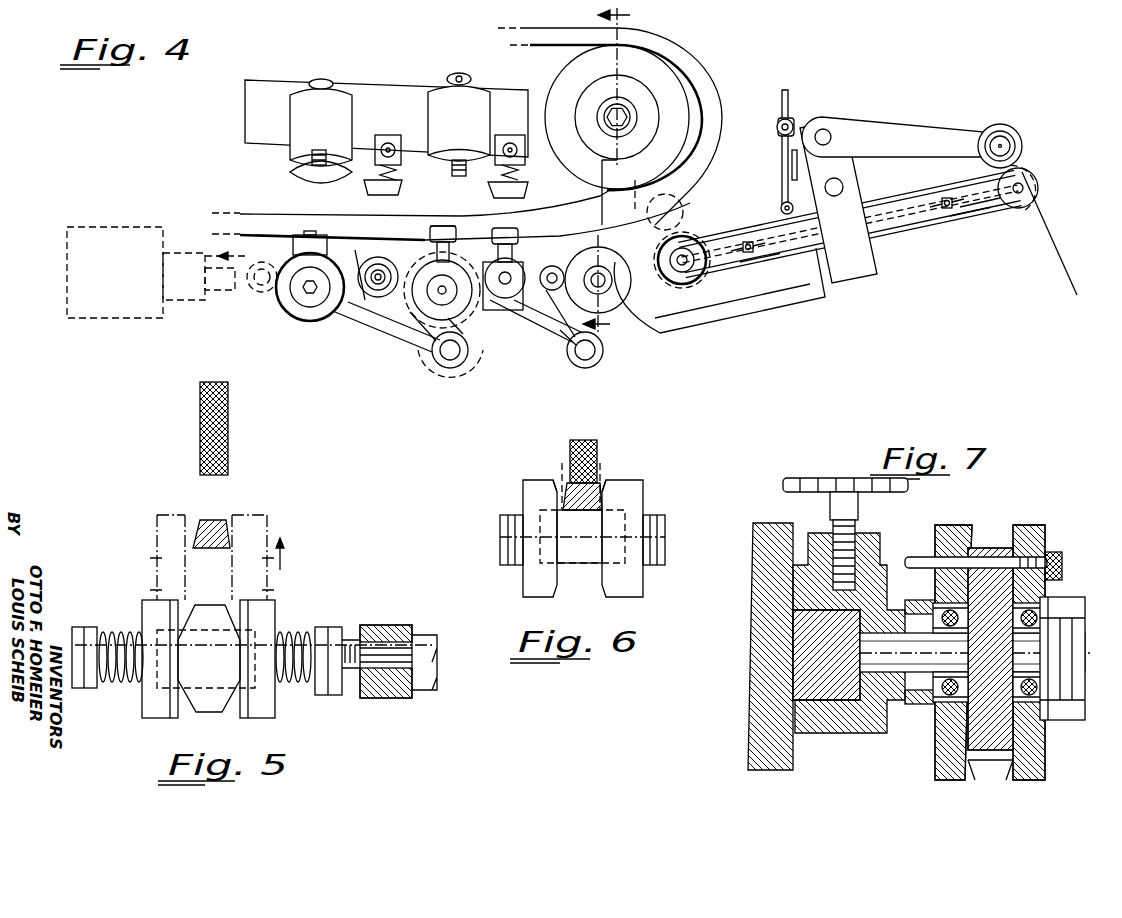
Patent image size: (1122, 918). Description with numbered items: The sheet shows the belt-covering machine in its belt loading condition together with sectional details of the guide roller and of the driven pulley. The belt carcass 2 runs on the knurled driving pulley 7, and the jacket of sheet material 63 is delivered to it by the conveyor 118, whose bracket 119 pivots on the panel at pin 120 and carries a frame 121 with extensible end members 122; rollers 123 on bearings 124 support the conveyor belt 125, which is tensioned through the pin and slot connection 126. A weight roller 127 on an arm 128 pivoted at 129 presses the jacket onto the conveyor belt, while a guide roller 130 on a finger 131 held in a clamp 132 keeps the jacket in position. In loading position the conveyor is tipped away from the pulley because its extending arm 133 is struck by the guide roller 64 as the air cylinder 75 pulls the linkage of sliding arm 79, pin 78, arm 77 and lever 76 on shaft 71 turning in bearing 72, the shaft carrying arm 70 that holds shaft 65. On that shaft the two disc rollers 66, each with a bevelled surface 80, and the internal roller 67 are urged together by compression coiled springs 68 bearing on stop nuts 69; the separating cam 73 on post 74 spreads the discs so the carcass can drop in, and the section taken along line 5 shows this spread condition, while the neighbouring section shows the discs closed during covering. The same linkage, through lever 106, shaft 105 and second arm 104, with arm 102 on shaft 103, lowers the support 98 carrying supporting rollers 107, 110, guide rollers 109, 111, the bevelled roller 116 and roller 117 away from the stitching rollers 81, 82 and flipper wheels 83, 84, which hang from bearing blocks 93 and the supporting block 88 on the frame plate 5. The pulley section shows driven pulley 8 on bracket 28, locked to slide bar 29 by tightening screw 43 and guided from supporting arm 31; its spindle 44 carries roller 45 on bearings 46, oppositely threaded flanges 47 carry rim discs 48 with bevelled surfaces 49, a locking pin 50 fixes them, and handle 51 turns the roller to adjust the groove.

In FIG. 4, the carcass 2 is at (706, 101).
In FIG. 5, the carcass 2 is at (212, 518).
In FIG. 6, the carcass 2 is at (605, 494).
In FIG. 4, the plate 5 is at (613, 172).
In FIG. 4, the driving pulley 7 is at (660, 70).
In FIG. 5, the driving pulley 7 is at (229, 426).
In FIG. 6, the driving pulley 7 is at (598, 450).
In FIG. 7, the driven pulley 8 is at (989, 640).
In FIG. 7, the bracket 28 is at (868, 733).
In FIG. 7, the slide bar 29 is at (842, 700).
In FIG. 7, the supporting arm 31 is at (752, 676).
In FIG. 7, the tightening screw 43 is at (860, 510).
In FIG. 7, the spindle 44 is at (1085, 655).
In FIG. 7, the roller 45 is at (1048, 566).
In FIG. 7, the bearings 46 is at (1035, 706).
In FIG. 7, the flanges 47 is at (1055, 608).
In FIG. 7, the rim discs 48 is at (1046, 537).
In FIG. 7, the bevelled surface 49 is at (975, 545).
In FIG. 7, the locking pin 50 is at (1063, 560).
In FIG. 7, the handle 51 is at (1082, 712).
In FIG. 4, the sheet material 63 is at (1042, 218).
In FIG. 6, the sheet material 63 is at (603, 470).
In FIG. 4, the guide roller 64 is at (553, 342).
In FIG. 5, the guide roller 64 is at (282, 618).
In FIG. 6, the guide roller 64 is at (652, 510).
In FIG. 4, the shaft 65 is at (628, 302).
In FIG. 5, the shaft 65 is at (350, 640).
In FIG. 5, the disc rollers 66 is at (270, 718).
In FIG. 6, the disc rollers 66 is at (645, 597).
In FIG. 5, the internal roller 67 is at (205, 713).
In FIG. 6, the internal roller 67 is at (570, 564).
In FIG. 5, the compression coiled springs 68 is at (295, 685).
In FIG. 5, the stop nut 69 is at (340, 697).
In FIG. 4, the arm 70 is at (660, 290).
In FIG. 4, the shaft 71 is at (702, 278).
In FIG. 4, the bearing 72 is at (700, 240).
In FIG. 4, the separating cam 73 is at (531, 331).
In FIG. 5, the separating cam 73 is at (221, 713).
In FIG. 4, the post 74 is at (551, 291).
In FIG. 4, the air cylinder 75 is at (138, 322).
In FIG. 4, the lever 76 is at (684, 206).
In FIG. 4, the arm 77 is at (637, 185).
In FIG. 4, the pin 78 is at (415, 302).
In FIG. 4, the sliding arm 79 is at (266, 294).
In FIG. 5, the bevelled surface 80 is at (268, 601).
In FIG. 6, the bevelled surface 80 is at (603, 598).
In FIG. 4, the stitching roller 81 is at (528, 188).
In FIG. 4, the stitching roller 82 is at (402, 188).
In FIG. 4, the flipper wheel 83 is at (462, 180).
In FIG. 4, the flipper wheel 84 is at (292, 170).
In FIG. 4, the supporting block 88 is at (392, 88).
In FIG. 4, the bearing block 93 is at (491, 108).
In FIG. 4, the support 98 is at (357, 256).
In FIG. 4, the arm 102 is at (566, 362).
In FIG. 4, the shaft 103 is at (588, 369).
In FIG. 4, the second arm 104 is at (338, 322).
In FIG. 4, the shaft 105 is at (450, 369).
In FIG. 4, the lever 106 is at (478, 366).
In FIG. 4, the supporting roller 107 is at (310, 322).
In FIG. 4, the guide roller 109 is at (310, 233).
In FIG. 4, the supporting roller 110 is at (420, 342).
In FIG. 4, the guide roller 111 is at (436, 230).
In FIG. 4, the roller 116 is at (524, 252).
In FIG. 4, the roller 117 is at (378, 257).
In FIG. 4, the conveyor 118 is at (945, 236).
In FIG. 4, the bracket 119 is at (850, 262).
In FIG. 4, the pin 120 is at (845, 185).
In FIG. 4, the frame 121 is at (893, 228).
In FIG. 4, the extensible end members 122 is at (752, 266).
In FIG. 4, the rollers 123 is at (1040, 178).
In FIG. 4, the bearings 124 is at (1022, 210).
In FIG. 4, the conveyor belt 125 is at (968, 226).
In FIG. 4, the pin and slot connection 126 is at (945, 196).
In FIG. 4, the roller 127 is at (1012, 130).
In FIG. 4, the arm 128 is at (922, 133).
In FIG. 4, the pivot 129 is at (831, 130).
In FIG. 4, the guide roller 130 is at (784, 200).
In FIG. 4, the finger 131 is at (778, 134).
In FIG. 4, the clamp 132 is at (792, 114).
In FIG. 4, the extending arm 133 is at (728, 318).